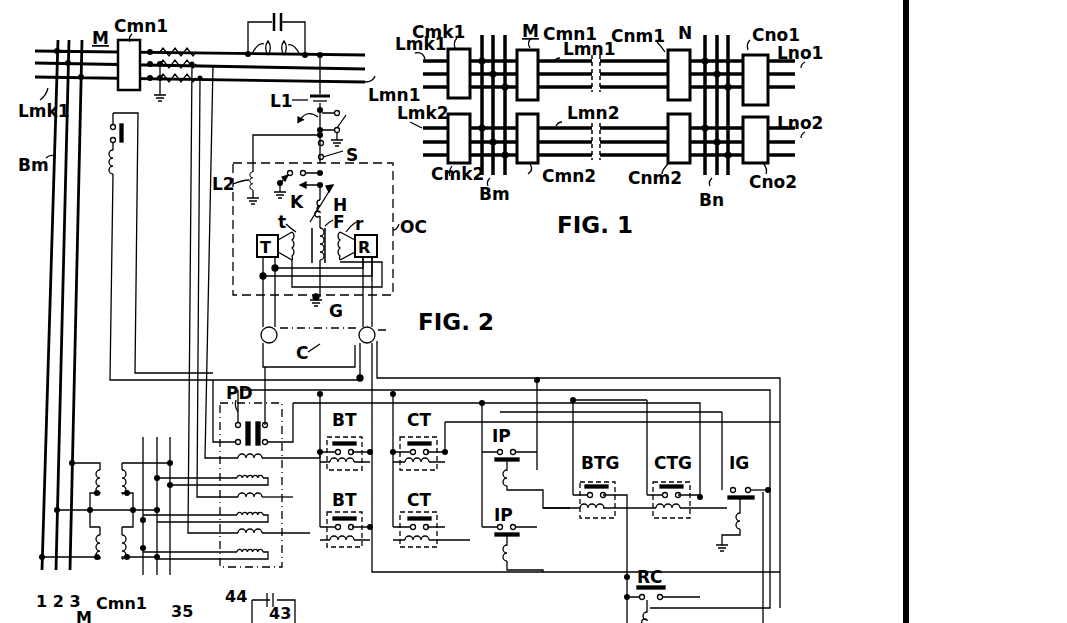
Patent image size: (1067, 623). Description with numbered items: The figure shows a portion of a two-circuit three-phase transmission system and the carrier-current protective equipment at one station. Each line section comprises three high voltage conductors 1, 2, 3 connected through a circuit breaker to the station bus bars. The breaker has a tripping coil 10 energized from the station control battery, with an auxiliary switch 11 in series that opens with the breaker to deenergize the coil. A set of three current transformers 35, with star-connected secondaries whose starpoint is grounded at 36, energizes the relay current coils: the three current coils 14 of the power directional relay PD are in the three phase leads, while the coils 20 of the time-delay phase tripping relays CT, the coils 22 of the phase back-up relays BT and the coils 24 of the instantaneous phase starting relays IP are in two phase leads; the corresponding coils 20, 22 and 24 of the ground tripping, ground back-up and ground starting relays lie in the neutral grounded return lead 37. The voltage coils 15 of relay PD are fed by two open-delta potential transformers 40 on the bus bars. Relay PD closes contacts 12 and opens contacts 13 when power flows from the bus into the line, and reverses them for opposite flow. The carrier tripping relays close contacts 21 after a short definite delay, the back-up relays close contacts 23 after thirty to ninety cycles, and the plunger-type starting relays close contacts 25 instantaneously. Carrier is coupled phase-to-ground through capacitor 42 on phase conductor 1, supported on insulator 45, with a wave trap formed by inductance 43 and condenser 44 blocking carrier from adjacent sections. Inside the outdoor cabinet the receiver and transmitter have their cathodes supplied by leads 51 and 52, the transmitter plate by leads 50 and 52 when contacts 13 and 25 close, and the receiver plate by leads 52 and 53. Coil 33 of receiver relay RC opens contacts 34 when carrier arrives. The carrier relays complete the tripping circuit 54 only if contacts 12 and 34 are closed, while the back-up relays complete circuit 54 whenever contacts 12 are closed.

In FIG. 1, the high voltage conductor 1 is at (609, 102).
In FIG. 2, the high voltage conductor 1 is at (193, 292).
In FIG. 1, the high voltage conductor 2 is at (609, 102).
In FIG. 2, the high voltage conductor 2 is at (193, 292).
In FIG. 1, the high voltage conductor 3 is at (609, 102).
In FIG. 2, the high voltage conductor 3 is at (193, 292).
In FIG. 2, the tripping coil 10 is at (111, 164).
In FIG. 2, the auxiliary switch 11 is at (112, 134).
In FIG. 2, the contacts 12 is at (238, 430).
In FIG. 2, the contacts 13 is at (270, 430).
In FIG. 2, the current coils 14 is at (272, 458).
In FIG. 2, the voltage coils 15 is at (228, 476).
In FIG. 2, the actuating current coil 20 is at (436, 470).
In FIG. 2, the contacts 21 is at (436, 443).
In FIG. 2, the actuating current coil 22 is at (362, 470).
In FIG. 2, the contacts 23 is at (362, 443).
In FIG. 2, the actuating current coil 24 is at (536, 471).
In FIG. 2, the contacts 25 is at (508, 449).
In FIG. 2, the actuating coil 33 is at (656, 620).
In FIG. 2, the contacts 34 is at (663, 590).
In FIG. 2, the current transformers 35 is at (182, 50).
In FIG. 2, the ground 36 is at (164, 104).
In FIG. 2, the neutral grounded return lead 37 is at (547, 511).
In FIG. 2, the potential transformers 40 is at (112, 469).
In FIG. 2, the capacitor 42 is at (332, 98).
In FIG. 2, the inductance 43 is at (280, 50).
In FIG. 2, the condenser 44 is at (258, 22).
In FIG. 2, the insulator 45 is at (344, 118).
In FIG. 2, the lead 50 is at (260, 304).
In FIG. 2, the lead 51 is at (260, 318).
In FIG. 2, the lead 52 is at (278, 307).
In FIG. 2, the lead 53 is at (280, 323).
In FIG. 2, the tripping circuit 54 is at (111, 244).